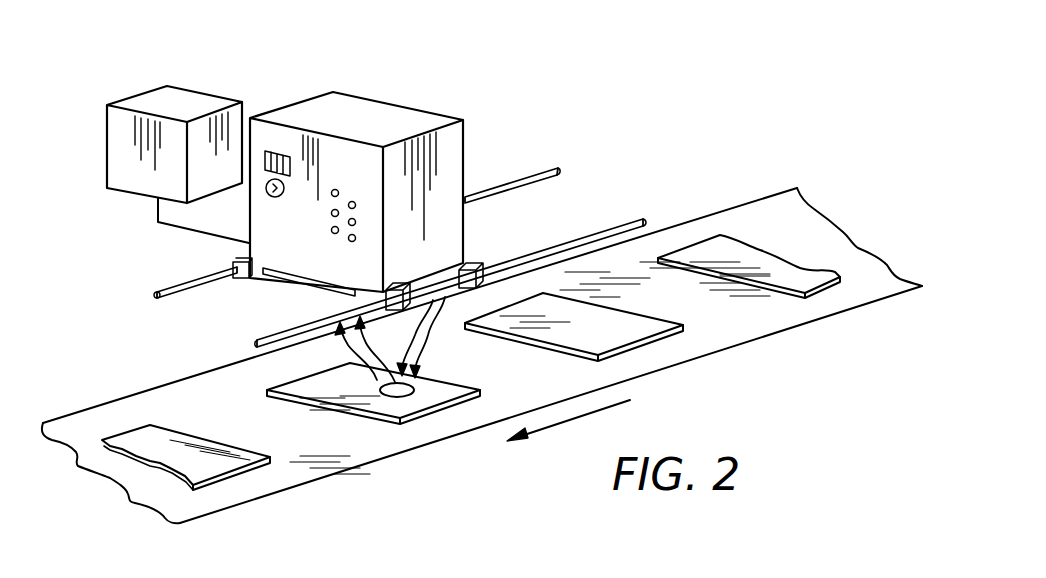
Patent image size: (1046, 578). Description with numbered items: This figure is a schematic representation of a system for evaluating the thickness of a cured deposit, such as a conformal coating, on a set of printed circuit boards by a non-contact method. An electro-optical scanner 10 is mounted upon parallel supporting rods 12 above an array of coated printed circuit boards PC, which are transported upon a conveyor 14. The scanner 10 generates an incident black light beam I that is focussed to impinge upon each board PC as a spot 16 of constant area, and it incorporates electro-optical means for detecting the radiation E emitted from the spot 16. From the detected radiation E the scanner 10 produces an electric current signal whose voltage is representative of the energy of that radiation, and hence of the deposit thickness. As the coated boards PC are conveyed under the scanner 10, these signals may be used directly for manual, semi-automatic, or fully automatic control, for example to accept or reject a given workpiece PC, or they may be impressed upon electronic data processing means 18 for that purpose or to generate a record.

The electro-optical scanner 10 is at (427, 113).
The parallel supporting rods 12 is at (557, 175).
The conveyor 14 is at (790, 232).
The spot 16 is at (402, 392).
The electronic data processing means 18 is at (177, 105).
The printed circuit boards PC is at (142, 440).
The emitted radiation E is at (348, 349).
The incident black light beam I is at (423, 344).